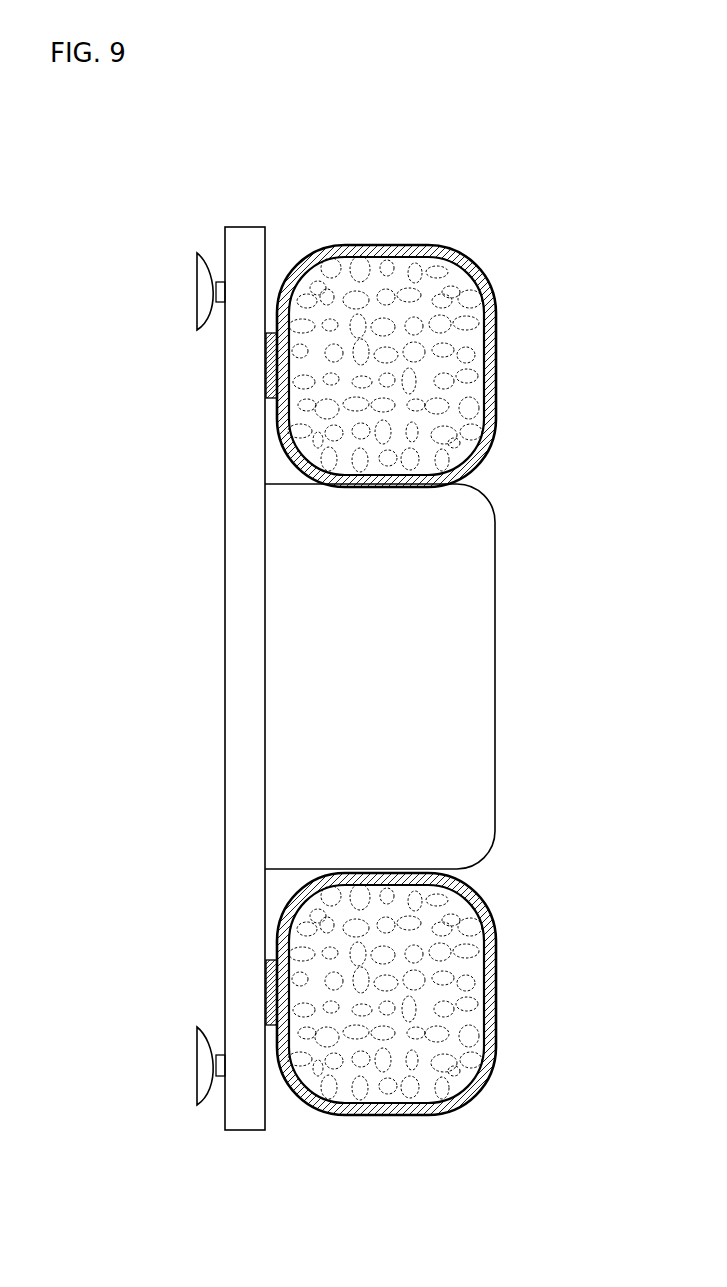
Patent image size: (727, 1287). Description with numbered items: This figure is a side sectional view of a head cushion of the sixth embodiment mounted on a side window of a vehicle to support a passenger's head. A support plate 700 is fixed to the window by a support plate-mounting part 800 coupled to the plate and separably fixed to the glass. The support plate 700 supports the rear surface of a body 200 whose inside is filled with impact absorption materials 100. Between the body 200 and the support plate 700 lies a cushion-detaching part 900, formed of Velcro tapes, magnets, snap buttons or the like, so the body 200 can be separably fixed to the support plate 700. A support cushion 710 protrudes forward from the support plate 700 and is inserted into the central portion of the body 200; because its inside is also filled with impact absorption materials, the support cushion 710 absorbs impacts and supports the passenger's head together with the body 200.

The impact absorption materials 100 is at (398, 283).
The body 200 is at (512, 367).
The support plate 700 is at (212, 652).
The support cushion 710 is at (470, 693).
The support plate-mounting part 800 is at (203, 293).
The cushion-detaching part 900 is at (268, 363).